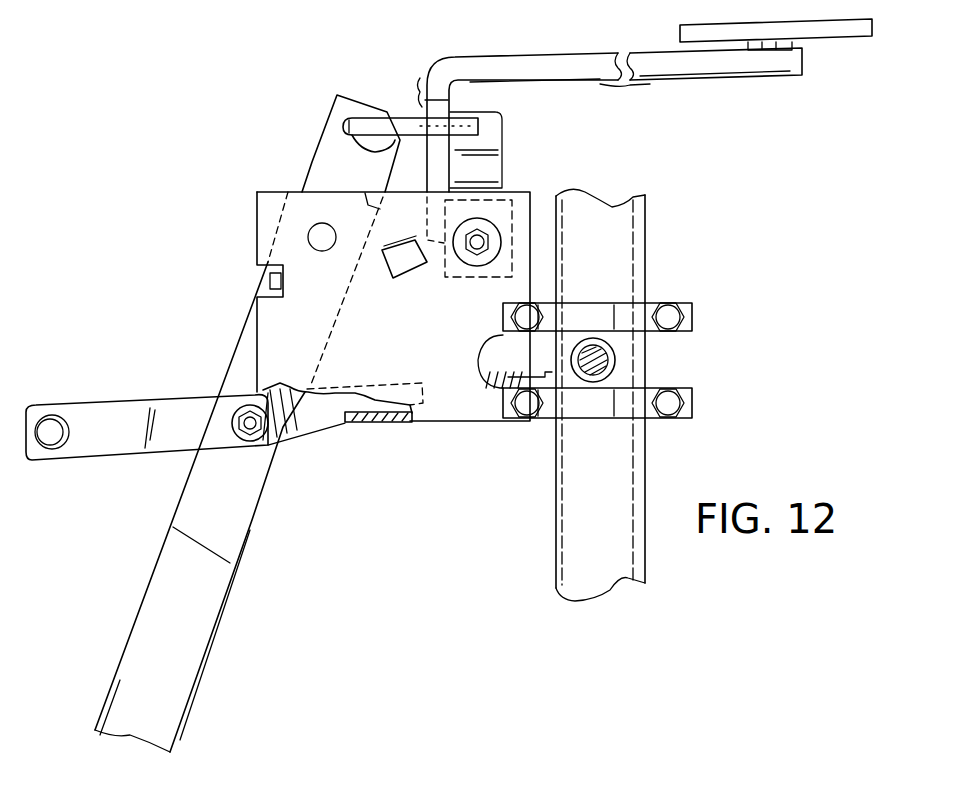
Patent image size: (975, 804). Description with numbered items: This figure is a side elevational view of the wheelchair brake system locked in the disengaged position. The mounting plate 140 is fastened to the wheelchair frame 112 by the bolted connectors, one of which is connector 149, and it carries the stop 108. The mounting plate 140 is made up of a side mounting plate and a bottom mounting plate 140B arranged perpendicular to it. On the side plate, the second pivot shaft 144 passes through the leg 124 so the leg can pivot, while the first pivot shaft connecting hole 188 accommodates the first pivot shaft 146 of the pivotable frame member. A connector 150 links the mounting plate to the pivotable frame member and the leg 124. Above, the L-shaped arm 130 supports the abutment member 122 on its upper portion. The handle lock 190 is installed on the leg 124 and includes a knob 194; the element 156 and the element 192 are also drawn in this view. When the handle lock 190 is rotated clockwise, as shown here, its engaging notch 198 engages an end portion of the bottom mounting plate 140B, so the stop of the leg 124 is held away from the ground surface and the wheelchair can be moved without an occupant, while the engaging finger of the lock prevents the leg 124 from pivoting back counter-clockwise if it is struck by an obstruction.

The stop 108 is at (403, 273).
The wheelchair frame 112 is at (570, 513).
The abutment member 122 is at (828, 30).
The leg 124 is at (168, 575).
The arm 130 is at (542, 70).
The mounting plate 140 is at (290, 319).
The bottom mounting plate 140B is at (387, 423).
The second pivot shaft 144 is at (310, 232).
The first pivot shaft 146 is at (490, 242).
The connector 149 is at (627, 403).
The connector 150 is at (403, 120).
The lobe 156 is at (372, 145).
The first pivot shaft connecting hole 188 is at (483, 235).
The handle lock 190 is at (100, 413).
The bolt 192 is at (262, 437).
The knob 194 is at (52, 440).
The engaging notch 198 is at (347, 425).